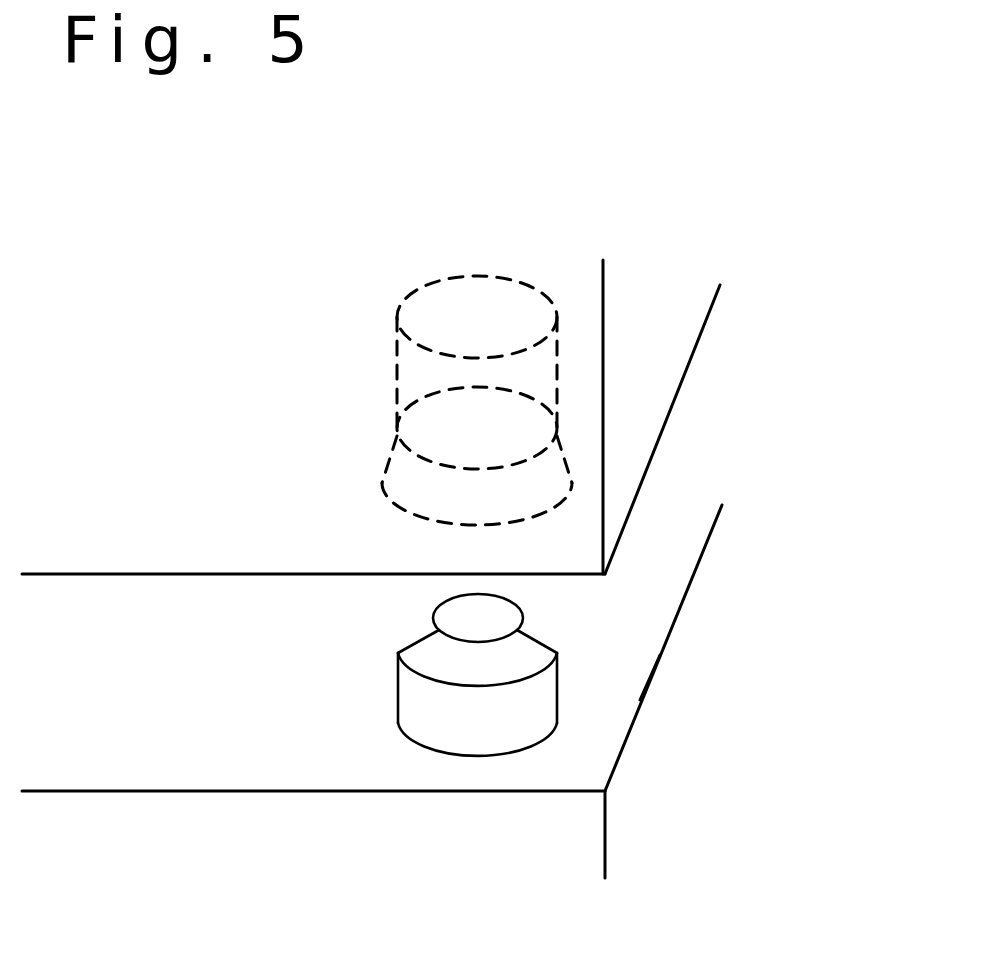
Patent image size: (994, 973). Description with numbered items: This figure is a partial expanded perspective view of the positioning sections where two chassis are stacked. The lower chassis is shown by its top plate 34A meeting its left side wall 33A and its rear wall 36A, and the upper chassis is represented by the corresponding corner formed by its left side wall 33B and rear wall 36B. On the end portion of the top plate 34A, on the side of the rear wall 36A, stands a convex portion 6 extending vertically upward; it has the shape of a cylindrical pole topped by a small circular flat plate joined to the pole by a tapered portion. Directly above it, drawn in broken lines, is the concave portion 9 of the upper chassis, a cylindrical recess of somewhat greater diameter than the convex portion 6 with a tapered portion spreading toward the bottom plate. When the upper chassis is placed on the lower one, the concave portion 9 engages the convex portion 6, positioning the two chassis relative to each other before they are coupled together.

The concave portion 9 is at (500, 316).
The convex portion 6 is at (467, 723).
The left side wall 33A is at (667, 750).
The left side wall 33B is at (663, 357).
The top plate 34A is at (623, 612).
The rear wall 36A is at (270, 848).
The rear wall 36B is at (218, 523).